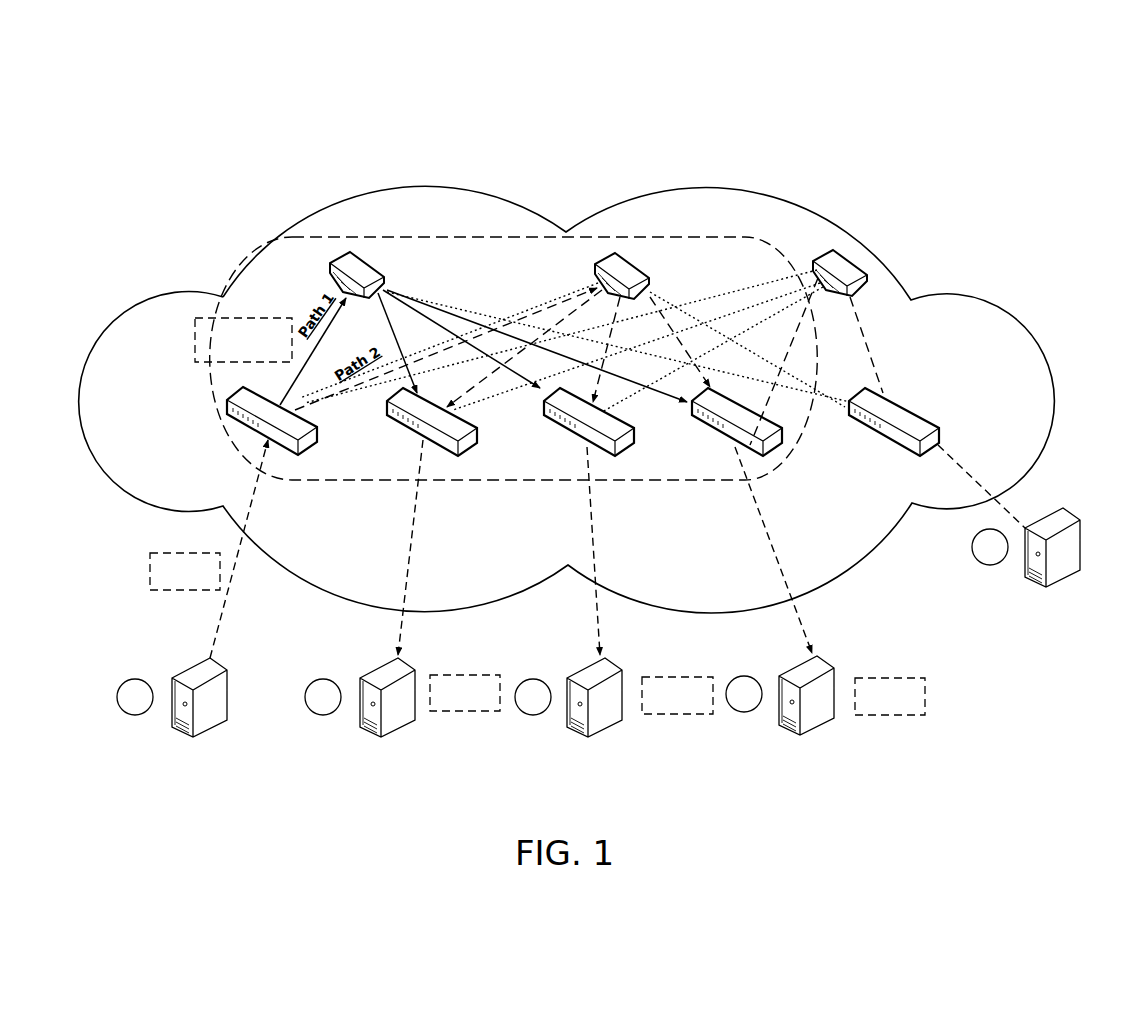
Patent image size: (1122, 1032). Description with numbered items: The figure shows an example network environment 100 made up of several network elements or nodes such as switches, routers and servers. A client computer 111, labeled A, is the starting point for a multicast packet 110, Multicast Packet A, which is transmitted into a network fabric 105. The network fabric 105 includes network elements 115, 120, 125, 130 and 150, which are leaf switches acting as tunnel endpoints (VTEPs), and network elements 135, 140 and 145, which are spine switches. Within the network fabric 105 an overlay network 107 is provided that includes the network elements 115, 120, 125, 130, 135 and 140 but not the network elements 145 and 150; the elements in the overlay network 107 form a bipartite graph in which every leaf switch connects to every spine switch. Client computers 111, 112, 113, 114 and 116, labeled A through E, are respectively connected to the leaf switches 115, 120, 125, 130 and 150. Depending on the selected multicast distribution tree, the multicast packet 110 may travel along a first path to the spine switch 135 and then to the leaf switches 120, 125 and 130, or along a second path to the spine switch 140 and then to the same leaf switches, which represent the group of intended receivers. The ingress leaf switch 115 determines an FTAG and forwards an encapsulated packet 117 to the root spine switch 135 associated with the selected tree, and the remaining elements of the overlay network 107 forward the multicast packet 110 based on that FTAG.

The network environment 100 is at (1023, 130).
The network fabric 105 is at (567, 399).
The overlay network 107 is at (514, 358).
The multicast packet 110 is at (148, 553).
The client computer 111 is at (192, 738).
The client computer 112 is at (383, 738).
The client computer 113 is at (590, 736).
The client computer 114 is at (802, 733).
The network element 115 is at (228, 398).
The client computer 116 is at (1048, 587).
The encapsulated packet 117 is at (242, 308).
The network element 120 is at (427, 437).
The network element 125 is at (585, 438).
The network element 130 is at (742, 447).
The network element 135 is at (362, 256).
The network element 140 is at (628, 253).
The network element 145 is at (852, 253).
The network element 150 is at (903, 400).